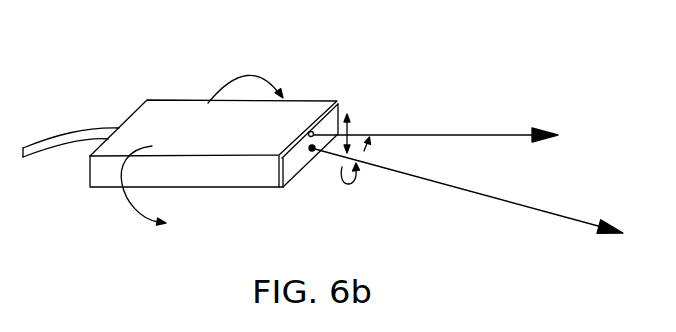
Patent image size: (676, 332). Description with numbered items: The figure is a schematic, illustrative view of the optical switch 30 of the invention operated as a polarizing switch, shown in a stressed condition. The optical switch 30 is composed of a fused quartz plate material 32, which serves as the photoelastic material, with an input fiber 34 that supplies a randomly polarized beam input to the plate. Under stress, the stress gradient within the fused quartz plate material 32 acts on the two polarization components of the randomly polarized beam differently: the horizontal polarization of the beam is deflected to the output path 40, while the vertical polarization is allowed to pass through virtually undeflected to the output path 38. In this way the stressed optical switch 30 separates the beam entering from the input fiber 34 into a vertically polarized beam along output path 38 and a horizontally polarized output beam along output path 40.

The optical switch 30 is at (129, 77).
The fused quartz plate material 32 is at (243, 143).
The input fiber 34 is at (53, 149).
The output path 38 is at (499, 137).
The output path 40 is at (548, 212).